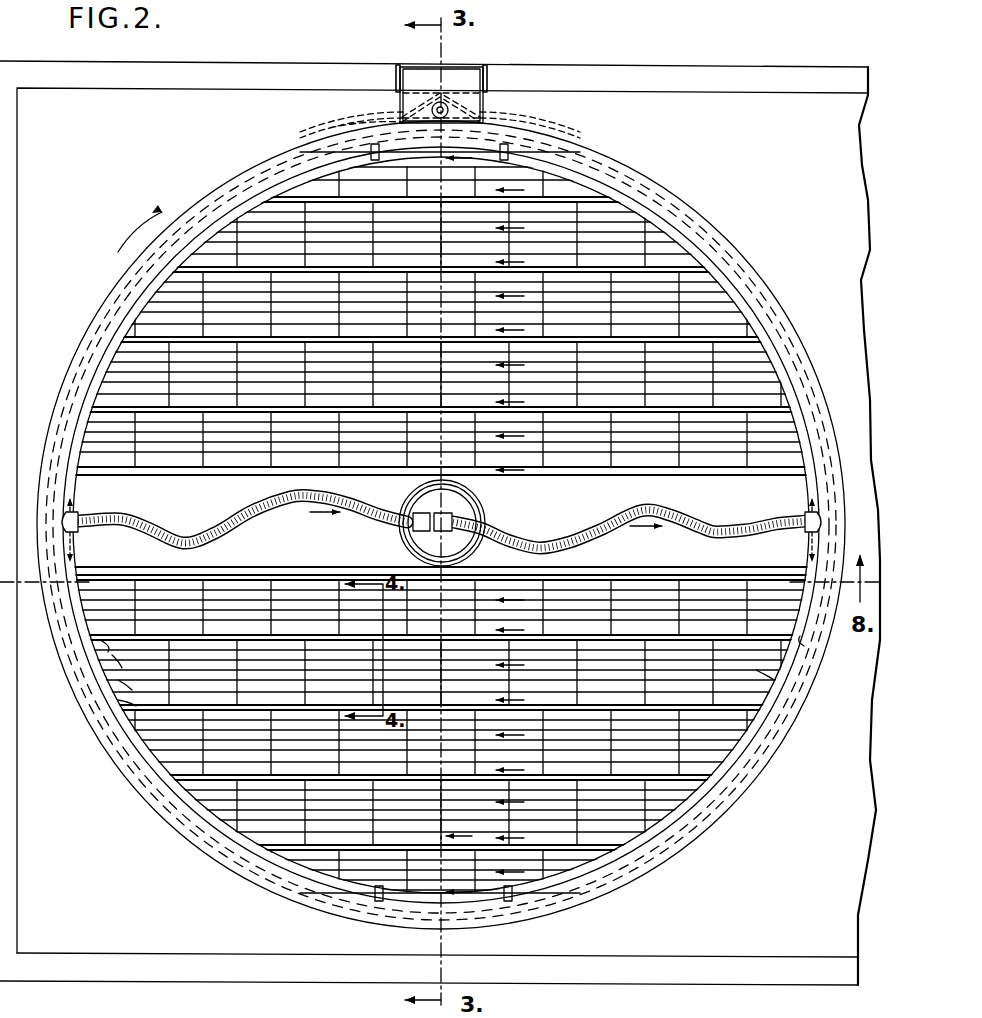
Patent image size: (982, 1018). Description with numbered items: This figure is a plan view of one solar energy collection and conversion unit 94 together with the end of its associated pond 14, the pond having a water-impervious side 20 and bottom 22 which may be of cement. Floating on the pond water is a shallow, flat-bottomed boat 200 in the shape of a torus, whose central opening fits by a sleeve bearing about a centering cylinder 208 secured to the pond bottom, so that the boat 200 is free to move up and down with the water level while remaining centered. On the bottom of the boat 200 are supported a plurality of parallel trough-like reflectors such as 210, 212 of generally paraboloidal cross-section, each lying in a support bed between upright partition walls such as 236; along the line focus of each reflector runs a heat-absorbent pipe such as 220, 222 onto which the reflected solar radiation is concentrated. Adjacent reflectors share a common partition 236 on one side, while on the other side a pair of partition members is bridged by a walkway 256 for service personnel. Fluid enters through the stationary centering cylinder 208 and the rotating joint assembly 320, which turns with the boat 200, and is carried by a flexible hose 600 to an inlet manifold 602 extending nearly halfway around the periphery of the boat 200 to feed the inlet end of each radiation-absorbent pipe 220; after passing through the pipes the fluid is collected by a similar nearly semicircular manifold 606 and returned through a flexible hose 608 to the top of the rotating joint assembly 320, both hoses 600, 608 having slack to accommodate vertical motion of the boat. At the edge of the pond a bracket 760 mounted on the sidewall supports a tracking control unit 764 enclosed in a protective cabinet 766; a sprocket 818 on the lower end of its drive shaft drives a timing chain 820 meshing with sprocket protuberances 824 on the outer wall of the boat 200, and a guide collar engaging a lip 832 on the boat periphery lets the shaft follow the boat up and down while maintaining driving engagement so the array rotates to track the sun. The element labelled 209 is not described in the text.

The water storage pond 14 is at (720, 66).
The water-impervious side 20 is at (236, 68).
The water-impervious bottom 22 is at (806, 112).
The solar energy collection and conversion unit 94 is at (731, 208).
The boat 200 is at (762, 282).
The lip 832 is at (806, 336).
The tracking control unit 764 is at (428, 72).
The protective cabinet 766 is at (456, 76).
The bracket 760 is at (486, 74).
The sprocket 818 is at (468, 103).
The timing chain 820 is at (400, 105).
The sprocket protuberances 824 is at (344, 116).
The tie bar 209 is at (104, 580).
The manifold 606 is at (80, 484).
The inlet manifold 602 is at (808, 538).
The flexible hose 608 is at (196, 540).
The flexible hose 600 is at (700, 524).
The centering cylinder 208 is at (478, 502).
The rotating joint assembly 320 is at (426, 543).
The trough-like reflector 212 is at (104, 645).
The heat-absorbent pipe 222 is at (116, 658).
The trough-like reflector 210 is at (128, 683).
The heat-absorbent pipe 220 is at (126, 702).
The walkway 256 is at (800, 638).
The partition wall 236 is at (760, 673).